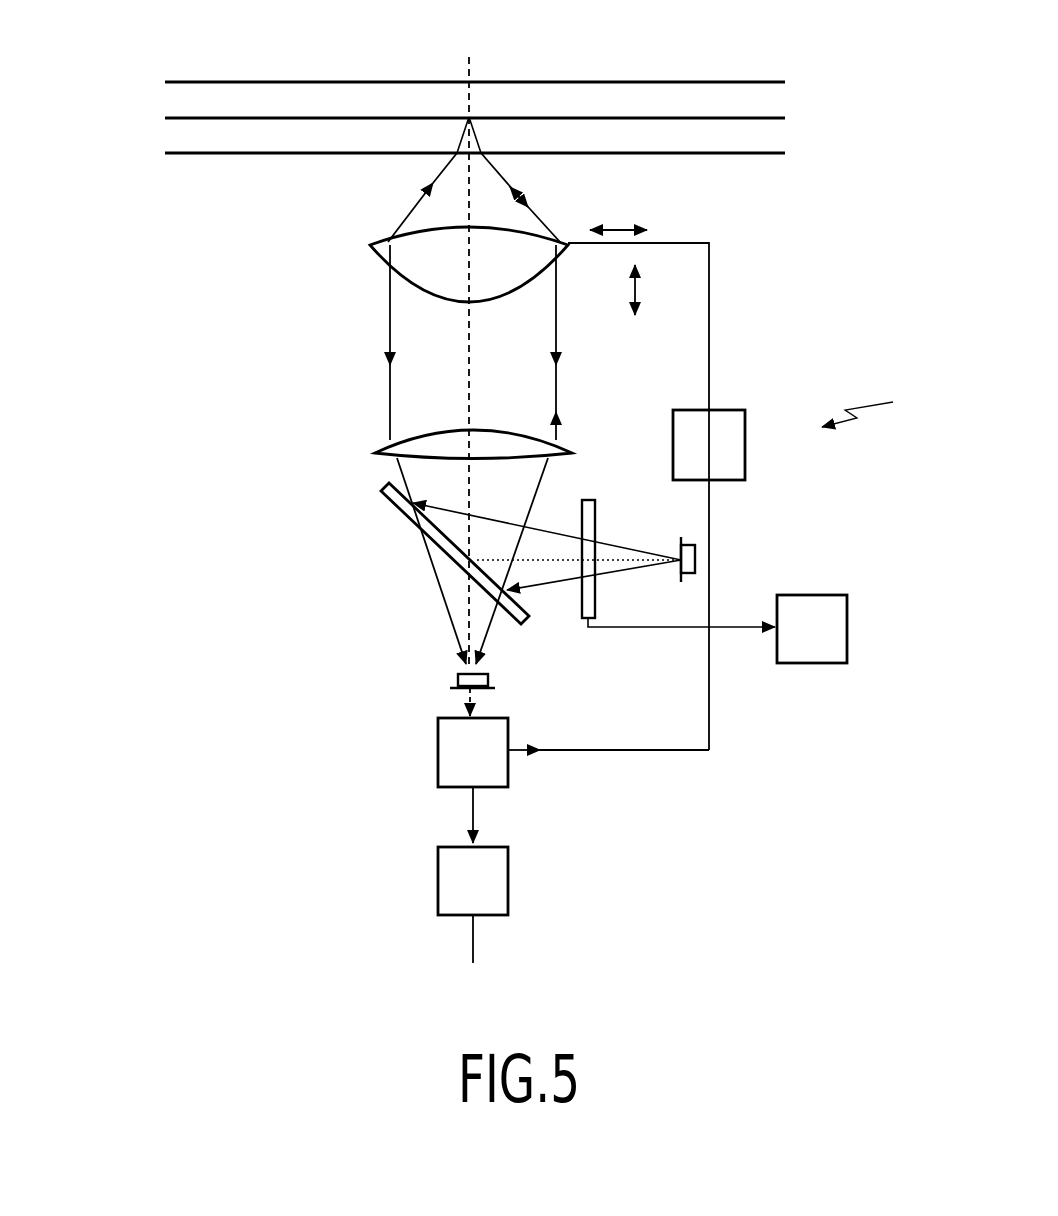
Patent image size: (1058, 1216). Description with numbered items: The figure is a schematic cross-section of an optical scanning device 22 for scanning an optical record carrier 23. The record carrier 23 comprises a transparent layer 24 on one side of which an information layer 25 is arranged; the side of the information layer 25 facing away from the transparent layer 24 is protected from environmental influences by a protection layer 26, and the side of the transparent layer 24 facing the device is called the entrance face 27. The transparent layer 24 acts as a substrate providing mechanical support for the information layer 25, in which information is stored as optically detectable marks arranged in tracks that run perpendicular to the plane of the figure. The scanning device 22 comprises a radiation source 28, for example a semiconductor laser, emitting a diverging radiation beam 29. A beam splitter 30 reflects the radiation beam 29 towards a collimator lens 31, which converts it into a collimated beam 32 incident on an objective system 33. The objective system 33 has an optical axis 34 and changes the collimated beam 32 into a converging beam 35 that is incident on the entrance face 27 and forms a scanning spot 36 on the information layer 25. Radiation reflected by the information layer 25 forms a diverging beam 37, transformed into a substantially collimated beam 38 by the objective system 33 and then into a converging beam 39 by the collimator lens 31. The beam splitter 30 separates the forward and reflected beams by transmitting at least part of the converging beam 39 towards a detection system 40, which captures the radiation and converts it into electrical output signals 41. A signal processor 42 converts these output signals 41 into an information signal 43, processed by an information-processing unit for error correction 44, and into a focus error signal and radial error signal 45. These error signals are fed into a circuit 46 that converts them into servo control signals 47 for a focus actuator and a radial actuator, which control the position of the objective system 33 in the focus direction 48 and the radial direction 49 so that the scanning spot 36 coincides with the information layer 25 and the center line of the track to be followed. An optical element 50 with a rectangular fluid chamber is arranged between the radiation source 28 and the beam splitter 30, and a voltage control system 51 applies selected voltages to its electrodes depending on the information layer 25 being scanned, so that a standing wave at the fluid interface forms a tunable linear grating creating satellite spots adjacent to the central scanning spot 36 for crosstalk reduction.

The optical scanning device 22 is at (882, 404).
The optical record carrier 23 is at (472, 117).
The transparent layer 24 is at (765, 133).
The information layer 25 is at (783, 112).
The protection layer 26 is at (768, 97).
The entrance face 27 is at (768, 152).
The radiation source 28 is at (700, 567).
The diverging radiation beam 29 is at (640, 548).
The beam splitter 30 is at (528, 623).
The collimator lens 31 is at (377, 452).
The collimated beam 32 is at (562, 425).
The objective system 33 is at (372, 248).
The optical axis 34 is at (467, 68).
The converging beam 35 is at (515, 192).
The scanning spot 36 is at (469, 117).
The diverging beam 37 is at (417, 209).
The substantially collimated beam 38 is at (557, 330).
The converging beam 39 is at (438, 582).
The detection system 40 is at (478, 682).
The electrical output signals 41 is at (468, 701).
The signal processor 42 is at (459, 768).
The information signal 43 is at (470, 813).
The information-processing unit for error correction 44 is at (459, 896).
The focus error signal and radial error signal 45 is at (625, 752).
The circuit 46 is at (695, 461).
The servo control signals 47 is at (711, 357).
The focus direction 48 is at (659, 290).
The radial direction 49 is at (618, 211).
The optical element 50 is at (592, 515).
The voltage control system 51 is at (798, 644).